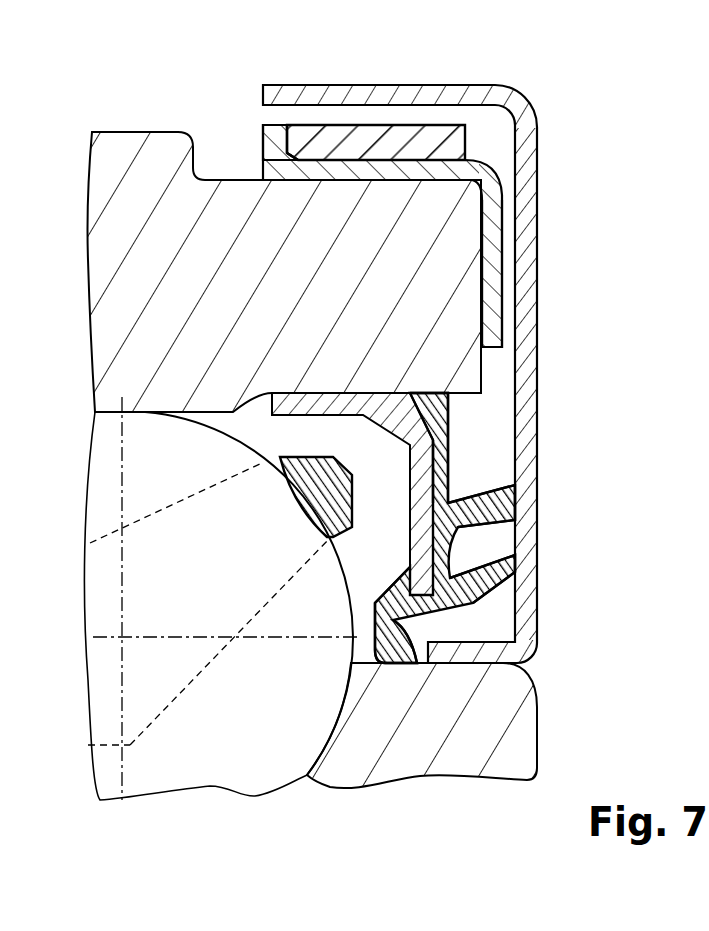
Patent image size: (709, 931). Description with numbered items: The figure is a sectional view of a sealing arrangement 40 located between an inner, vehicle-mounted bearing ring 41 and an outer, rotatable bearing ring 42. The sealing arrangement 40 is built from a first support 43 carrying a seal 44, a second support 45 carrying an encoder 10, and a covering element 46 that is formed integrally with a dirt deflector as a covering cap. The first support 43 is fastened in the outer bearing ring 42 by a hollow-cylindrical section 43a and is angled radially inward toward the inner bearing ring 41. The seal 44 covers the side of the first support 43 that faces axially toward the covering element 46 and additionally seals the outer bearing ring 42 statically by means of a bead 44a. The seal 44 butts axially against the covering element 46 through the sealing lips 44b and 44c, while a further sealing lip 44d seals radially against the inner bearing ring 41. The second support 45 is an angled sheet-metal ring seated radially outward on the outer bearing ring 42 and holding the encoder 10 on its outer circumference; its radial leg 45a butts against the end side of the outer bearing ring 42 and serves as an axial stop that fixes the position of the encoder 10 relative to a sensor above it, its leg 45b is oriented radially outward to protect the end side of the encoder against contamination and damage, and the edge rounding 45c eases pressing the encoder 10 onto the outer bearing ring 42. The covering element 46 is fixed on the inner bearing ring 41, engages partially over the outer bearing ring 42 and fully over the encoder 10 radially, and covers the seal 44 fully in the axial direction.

The encoder 10 is at (370, 130).
The sealing arrangement 40 is at (498, 476).
The inner bearing ring 41 is at (480, 768).
The outer bearing ring 42 is at (125, 140).
The first support 43 is at (331, 405).
The hollow-cylindrical section 43a is at (281, 408).
The seal 44 is at (470, 530).
The bead 44a is at (447, 402).
The sealing lip 44b is at (510, 497).
The sealing lip 44c is at (510, 572).
The further sealing lip 44d is at (397, 665).
The second support 45 is at (492, 207).
The radial leg 45a is at (492, 287).
The leg 45b is at (278, 140).
The edge rounding 45c is at (270, 182).
The covering element 46 is at (527, 437).